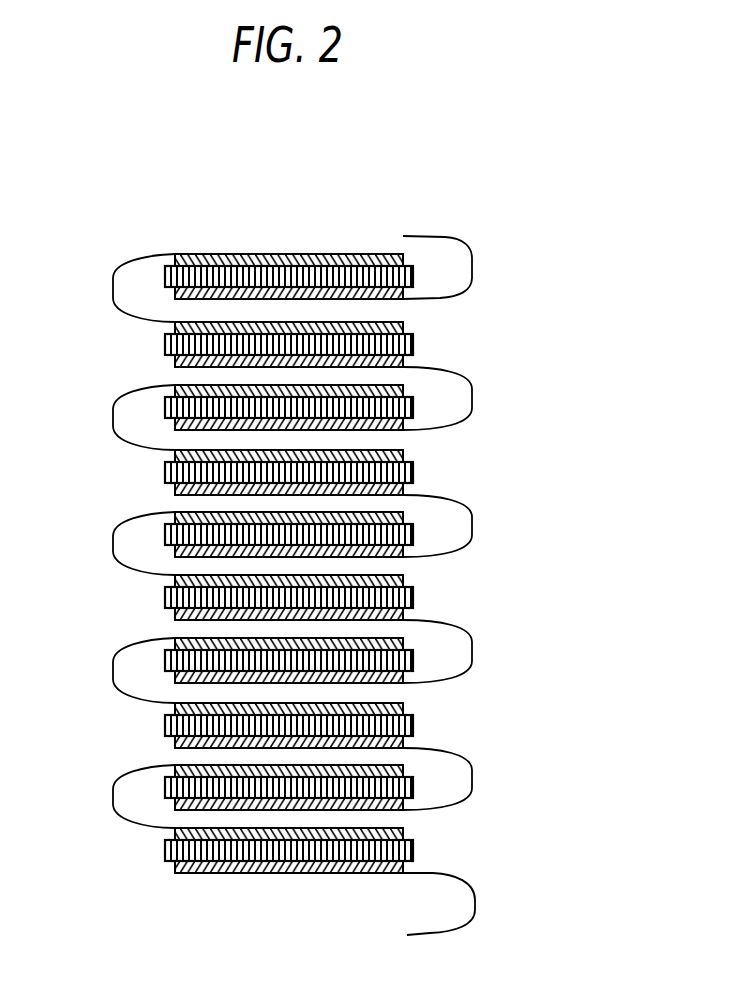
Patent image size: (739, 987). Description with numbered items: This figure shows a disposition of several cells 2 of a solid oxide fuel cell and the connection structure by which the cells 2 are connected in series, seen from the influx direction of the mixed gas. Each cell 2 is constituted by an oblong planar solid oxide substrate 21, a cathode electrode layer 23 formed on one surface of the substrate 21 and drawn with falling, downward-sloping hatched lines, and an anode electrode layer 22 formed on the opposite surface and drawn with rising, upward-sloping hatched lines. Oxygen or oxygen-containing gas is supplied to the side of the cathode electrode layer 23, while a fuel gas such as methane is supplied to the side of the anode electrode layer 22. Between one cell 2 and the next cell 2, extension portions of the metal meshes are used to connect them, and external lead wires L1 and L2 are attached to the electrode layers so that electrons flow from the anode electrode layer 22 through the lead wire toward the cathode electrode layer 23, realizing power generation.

The cell 2 is at (163, 224).
The solid oxide substrate 21 is at (403, 278).
The anode electrode layer 22 is at (307, 256).
The cathode electrode layer 23 is at (385, 300).
The external lead wire L1 is at (113, 280).
The external lead wire L2 is at (445, 237).